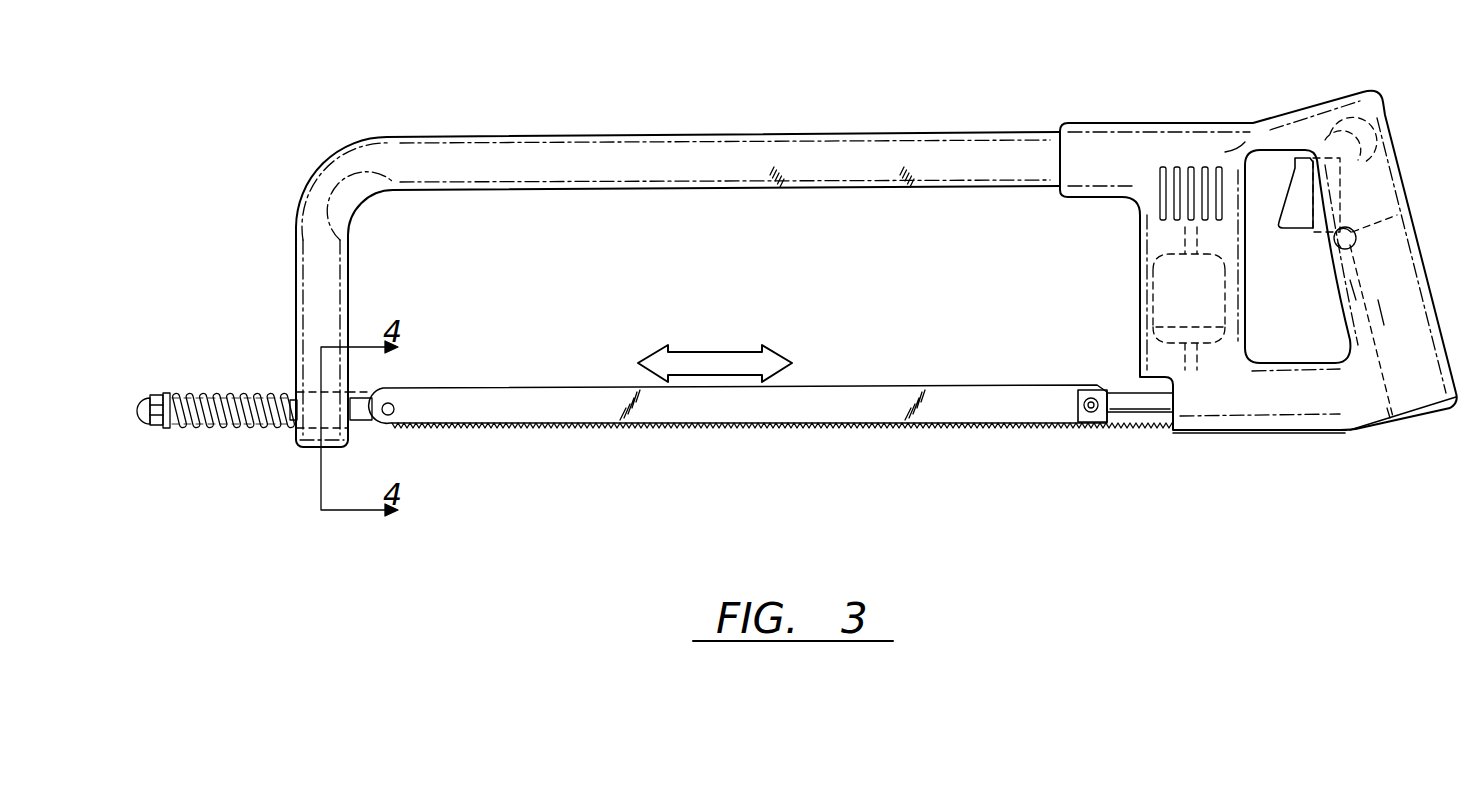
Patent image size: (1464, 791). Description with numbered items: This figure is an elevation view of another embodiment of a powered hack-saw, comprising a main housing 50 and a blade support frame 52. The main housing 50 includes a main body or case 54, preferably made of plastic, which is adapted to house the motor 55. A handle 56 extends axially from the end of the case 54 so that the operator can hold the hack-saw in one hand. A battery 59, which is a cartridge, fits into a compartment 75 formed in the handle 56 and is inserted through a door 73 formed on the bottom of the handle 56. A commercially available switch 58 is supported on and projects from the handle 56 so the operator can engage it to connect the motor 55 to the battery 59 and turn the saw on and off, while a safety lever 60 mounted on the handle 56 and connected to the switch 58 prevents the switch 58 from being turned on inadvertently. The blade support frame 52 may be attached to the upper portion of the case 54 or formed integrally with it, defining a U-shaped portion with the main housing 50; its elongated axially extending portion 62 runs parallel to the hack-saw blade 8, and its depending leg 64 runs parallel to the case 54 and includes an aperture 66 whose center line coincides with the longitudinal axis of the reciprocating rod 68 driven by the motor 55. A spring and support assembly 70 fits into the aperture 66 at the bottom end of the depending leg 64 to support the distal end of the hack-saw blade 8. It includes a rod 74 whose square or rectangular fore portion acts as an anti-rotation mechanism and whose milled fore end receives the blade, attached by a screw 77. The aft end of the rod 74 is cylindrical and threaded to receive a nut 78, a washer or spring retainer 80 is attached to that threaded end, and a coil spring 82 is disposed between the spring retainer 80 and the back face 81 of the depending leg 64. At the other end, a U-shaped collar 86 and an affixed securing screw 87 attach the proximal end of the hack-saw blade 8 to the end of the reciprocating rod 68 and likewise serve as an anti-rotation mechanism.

The hack-saw blade 8 is at (905, 385).
The main housing 50 is at (797, 271).
The blade support frame 52 is at (678, 247).
The main body or case 54 is at (1150, 235).
The motor 55 is at (1168, 307).
The handle 56 is at (1375, 180).
The switch 58 is at (1288, 185).
The battery 59 is at (1385, 310).
The safety lever 60 is at (1340, 245).
The elongated axially extending portion 62 is at (500, 137).
The depending leg 64 is at (330, 280).
The aperture 66 is at (355, 390).
The reciprocating rod 68 is at (1143, 413).
The spring and support assembly 70 is at (217, 393).
The door 73 is at (1418, 413).
The rod 74 is at (362, 417).
The compartment 75 is at (1353, 287).
The screw 77 is at (390, 414).
The nut 78 is at (153, 395).
The washer or spring retainer 80 is at (166, 393).
The back face 81 is at (293, 430).
The coil spring 82 is at (240, 393).
The U-shaped collar 86 is at (1093, 423).
The securing screw 87 is at (1091, 398).